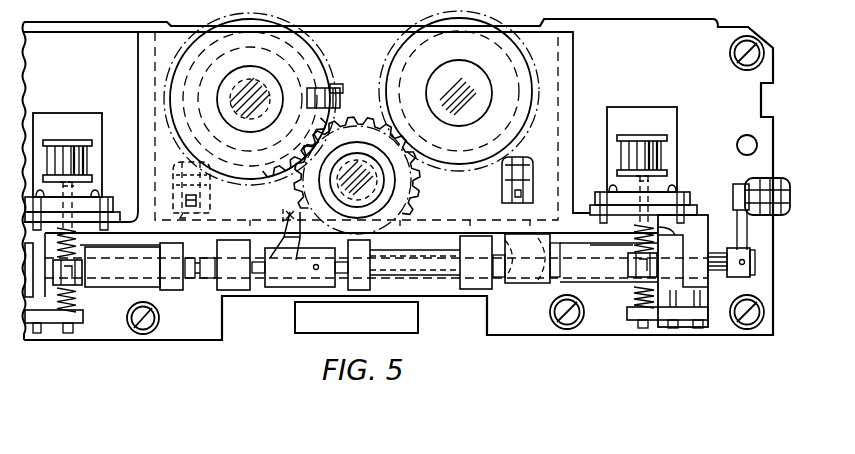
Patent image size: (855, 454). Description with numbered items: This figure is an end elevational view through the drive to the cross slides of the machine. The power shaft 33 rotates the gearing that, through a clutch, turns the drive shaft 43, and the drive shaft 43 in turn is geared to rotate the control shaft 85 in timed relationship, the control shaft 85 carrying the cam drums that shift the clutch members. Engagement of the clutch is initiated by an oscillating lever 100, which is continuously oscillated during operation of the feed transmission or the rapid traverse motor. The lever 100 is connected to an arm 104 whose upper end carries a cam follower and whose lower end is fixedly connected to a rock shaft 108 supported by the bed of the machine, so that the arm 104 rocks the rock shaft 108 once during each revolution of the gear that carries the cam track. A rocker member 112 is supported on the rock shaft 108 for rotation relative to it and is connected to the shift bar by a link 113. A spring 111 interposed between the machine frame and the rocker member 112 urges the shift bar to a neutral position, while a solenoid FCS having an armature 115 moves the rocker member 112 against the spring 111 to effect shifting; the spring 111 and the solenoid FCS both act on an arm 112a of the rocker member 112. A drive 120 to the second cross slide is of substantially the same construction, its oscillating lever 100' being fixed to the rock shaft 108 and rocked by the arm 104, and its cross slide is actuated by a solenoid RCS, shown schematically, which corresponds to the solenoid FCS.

The drive shaft 43 is at (305, 82).
The drive 120 is at (474, 50).
The power shaft 33 is at (386, 190).
The control shaft 85 is at (186, 163).
The oscillating lever 100 is at (207, 187).
The link 113 is at (199, 210).
The arm 104 is at (288, 210).
The oscillating lever 100' is at (523, 172).
The solenoid FCS is at (93, 165).
The solenoid RCS is at (672, 165).
The armature 115 is at (83, 188).
The arm 112a is at (84, 268).
The spring 111 is at (80, 298).
The rocker member 112 is at (148, 287).
The rock shaft 108 is at (434, 291).